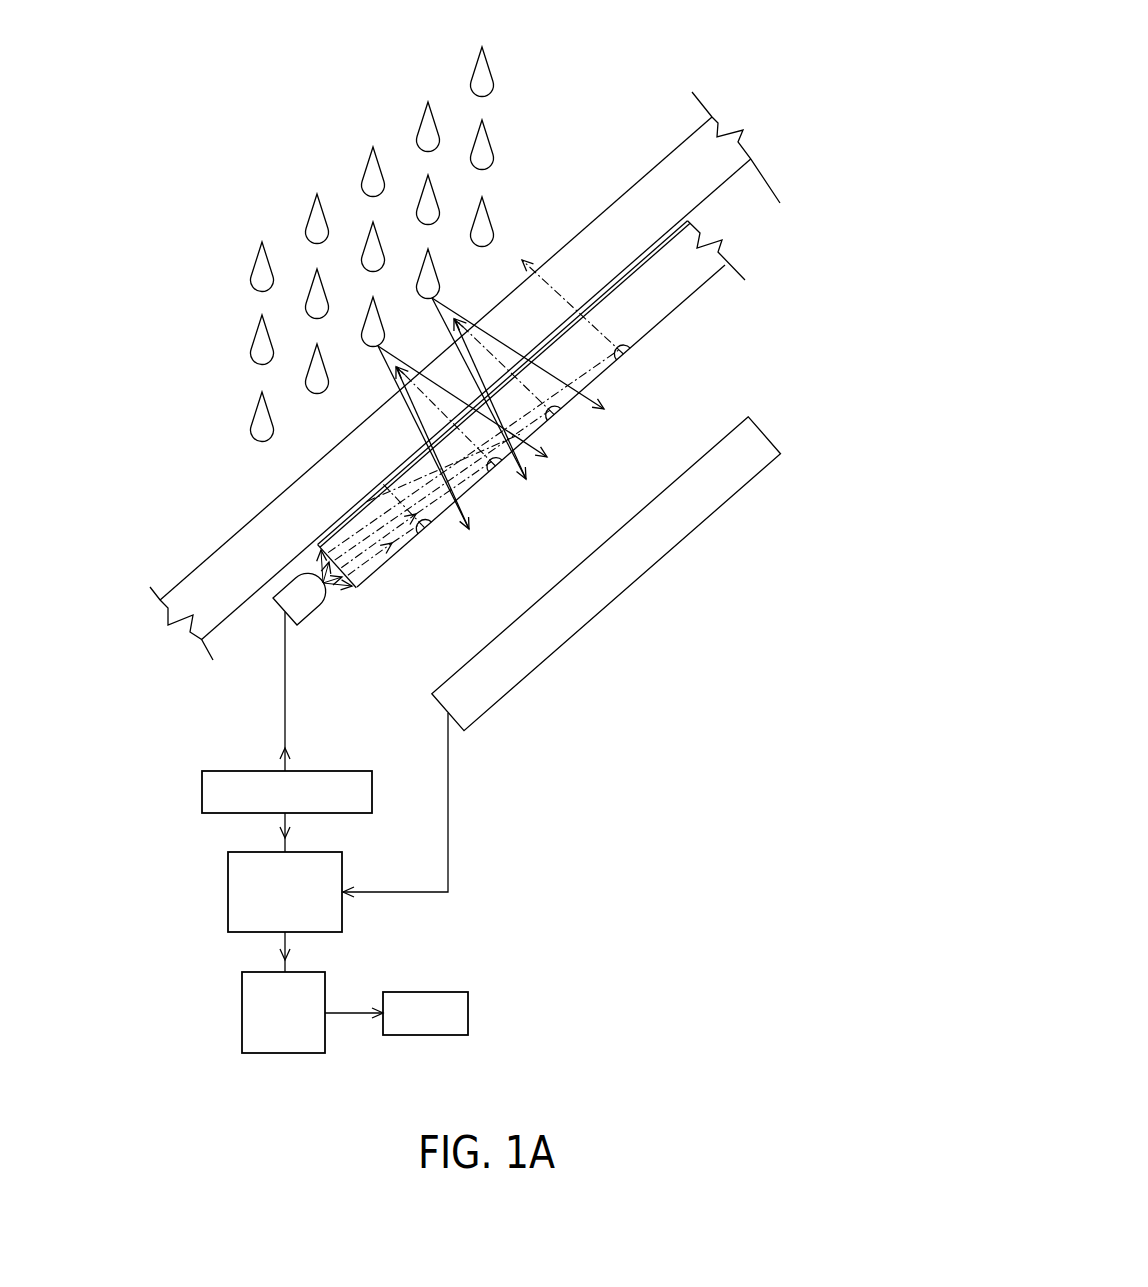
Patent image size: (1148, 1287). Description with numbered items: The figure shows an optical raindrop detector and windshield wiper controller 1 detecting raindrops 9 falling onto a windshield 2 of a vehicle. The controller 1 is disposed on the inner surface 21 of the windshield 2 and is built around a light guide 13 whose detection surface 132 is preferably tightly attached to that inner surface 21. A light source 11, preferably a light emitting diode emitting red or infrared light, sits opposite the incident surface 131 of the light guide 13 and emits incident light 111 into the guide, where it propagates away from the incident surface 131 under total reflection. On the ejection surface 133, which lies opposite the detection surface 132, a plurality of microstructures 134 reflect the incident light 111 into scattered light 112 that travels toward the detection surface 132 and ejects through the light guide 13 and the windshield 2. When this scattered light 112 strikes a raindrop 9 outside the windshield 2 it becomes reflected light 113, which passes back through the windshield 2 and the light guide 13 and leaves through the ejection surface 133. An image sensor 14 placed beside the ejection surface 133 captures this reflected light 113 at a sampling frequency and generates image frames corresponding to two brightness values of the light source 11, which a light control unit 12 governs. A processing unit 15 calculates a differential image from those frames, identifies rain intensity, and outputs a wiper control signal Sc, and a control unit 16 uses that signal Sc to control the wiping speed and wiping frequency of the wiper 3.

The optical raindrop detector and windshield wiper controller 1 is at (823, 284).
The windshield 2 is at (686, 193).
The inner surface 21 is at (744, 171).
The wiper 3 is at (453, 992).
The raindrops 9 is at (494, 80).
The light source 11 is at (306, 606).
The incident light 111 is at (578, 413).
The scattered light 112 is at (522, 252).
The reflected light 113 is at (532, 471).
The light control unit 12 is at (202, 785).
The light guide 13 is at (663, 297).
The incident surface 131 is at (351, 589).
The detection surface 132 is at (663, 247).
The ejection surface 133 is at (378, 571).
The microstructures 134 is at (426, 524).
The image sensor 14 is at (767, 430).
The processing unit 15 is at (228, 883).
The control unit 16 is at (242, 1007).
The wiper control signal Sc is at (283, 953).